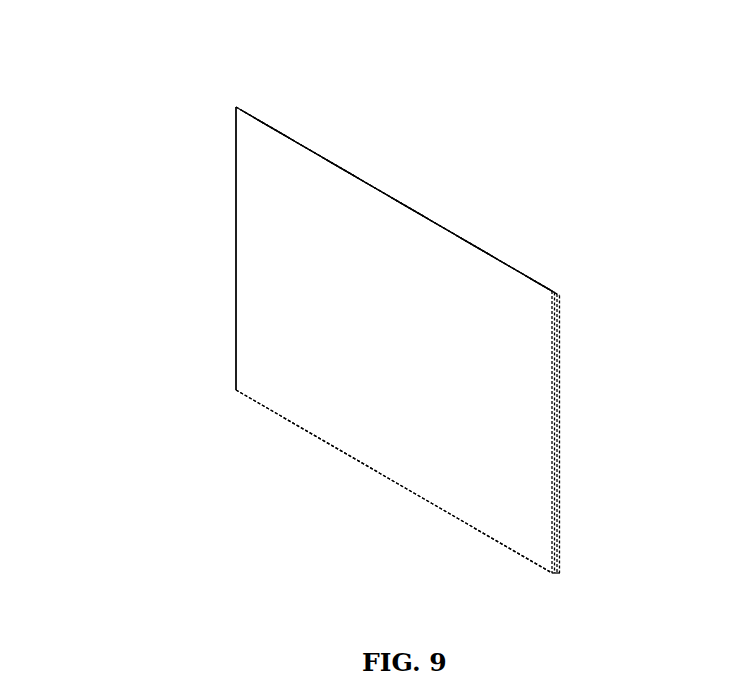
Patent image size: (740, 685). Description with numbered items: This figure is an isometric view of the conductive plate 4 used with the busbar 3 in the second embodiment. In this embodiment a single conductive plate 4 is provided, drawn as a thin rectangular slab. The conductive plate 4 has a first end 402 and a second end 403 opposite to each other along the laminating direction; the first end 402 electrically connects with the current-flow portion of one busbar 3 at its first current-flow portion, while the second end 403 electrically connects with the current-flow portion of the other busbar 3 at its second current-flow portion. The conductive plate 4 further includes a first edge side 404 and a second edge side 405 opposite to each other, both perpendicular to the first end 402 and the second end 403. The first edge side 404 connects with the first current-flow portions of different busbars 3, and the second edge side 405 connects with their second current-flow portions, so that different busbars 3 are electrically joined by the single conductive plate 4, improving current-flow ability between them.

The busbar 3 is at (398, 196).
The conductive plate 4 is at (286, 321).
The first end 402 is at (279, 124).
The second end 403 is at (240, 432).
The first edge side 404 is at (196, 211).
The second edge side 405 is at (590, 410).